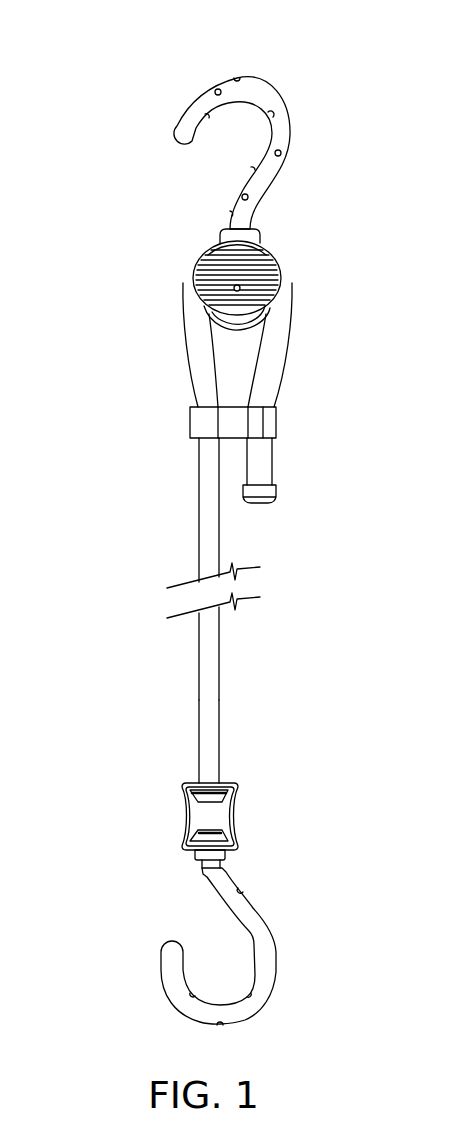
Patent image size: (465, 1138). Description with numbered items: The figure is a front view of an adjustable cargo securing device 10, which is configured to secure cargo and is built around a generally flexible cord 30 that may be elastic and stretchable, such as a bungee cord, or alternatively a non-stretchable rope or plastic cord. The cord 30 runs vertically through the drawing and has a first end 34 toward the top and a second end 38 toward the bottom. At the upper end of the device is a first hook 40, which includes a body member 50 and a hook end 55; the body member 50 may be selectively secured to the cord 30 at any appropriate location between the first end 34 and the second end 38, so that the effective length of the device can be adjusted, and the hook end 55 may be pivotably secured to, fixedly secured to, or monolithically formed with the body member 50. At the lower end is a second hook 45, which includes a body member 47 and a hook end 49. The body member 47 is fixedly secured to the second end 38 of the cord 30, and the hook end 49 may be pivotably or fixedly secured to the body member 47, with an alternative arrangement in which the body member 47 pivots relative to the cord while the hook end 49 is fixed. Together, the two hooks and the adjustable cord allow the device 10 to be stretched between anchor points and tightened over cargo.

The adjustable cargo securing device 10 is at (140, 442).
The hook end 55 is at (273, 102).
The body member 50 is at (212, 245).
The first hook 40 is at (272, 248).
The first end 34 is at (265, 458).
The cord 30 is at (208, 545).
The second end 38 is at (208, 760).
The second hook 45 is at (237, 837).
The body member 47 is at (198, 810).
The hook end 49 is at (265, 933).